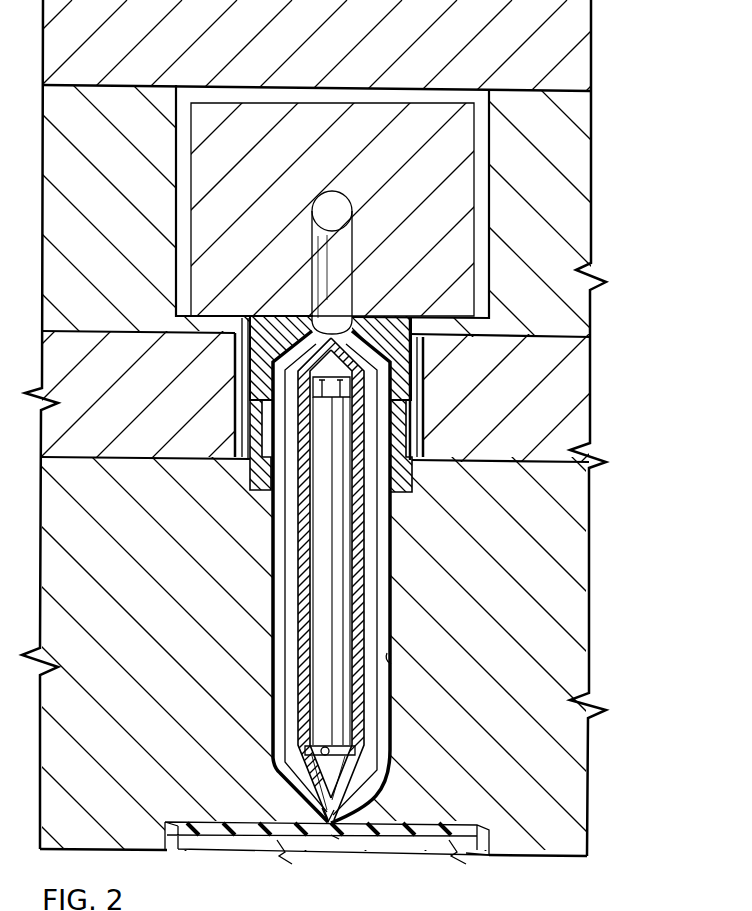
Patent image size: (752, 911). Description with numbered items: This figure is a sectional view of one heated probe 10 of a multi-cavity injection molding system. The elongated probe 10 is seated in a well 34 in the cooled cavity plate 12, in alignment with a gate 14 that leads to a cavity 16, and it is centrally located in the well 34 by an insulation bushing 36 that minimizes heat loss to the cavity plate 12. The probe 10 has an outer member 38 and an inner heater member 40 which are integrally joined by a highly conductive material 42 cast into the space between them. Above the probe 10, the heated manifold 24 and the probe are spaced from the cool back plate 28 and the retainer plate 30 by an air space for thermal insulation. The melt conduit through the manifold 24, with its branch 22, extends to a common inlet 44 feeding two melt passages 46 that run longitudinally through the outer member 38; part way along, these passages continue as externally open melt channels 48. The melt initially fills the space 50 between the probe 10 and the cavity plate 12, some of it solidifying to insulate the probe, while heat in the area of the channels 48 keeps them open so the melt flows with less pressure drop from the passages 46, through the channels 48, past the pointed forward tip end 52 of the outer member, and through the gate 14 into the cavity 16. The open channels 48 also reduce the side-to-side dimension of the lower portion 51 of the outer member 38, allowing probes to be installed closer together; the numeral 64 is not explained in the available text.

The heated probe 10 is at (398, 355).
The cavity plate 12 is at (574, 762).
The gate 14 is at (325, 823).
The cavity 16 is at (415, 837).
The branch 22 is at (347, 212).
The manifold 24 is at (461, 146).
The back plate 28 is at (578, 32).
The retainer plate 30 is at (576, 420).
The well 34 is at (389, 660).
The insulation bushing 36 is at (409, 497).
The outer member 38 is at (358, 533).
The inner heater member 40 is at (337, 577).
The highly conductive material 42 is at (376, 690).
The common inlet 44 is at (345, 320).
The melt passages 46 is at (287, 388).
The externally open melt channels 48 is at (291, 546).
The space 50 is at (267, 622).
The lower portion 51 is at (302, 715).
The pointed forward tip end 52 is at (335, 837).
The bottom plate edge 64 is at (495, 882).